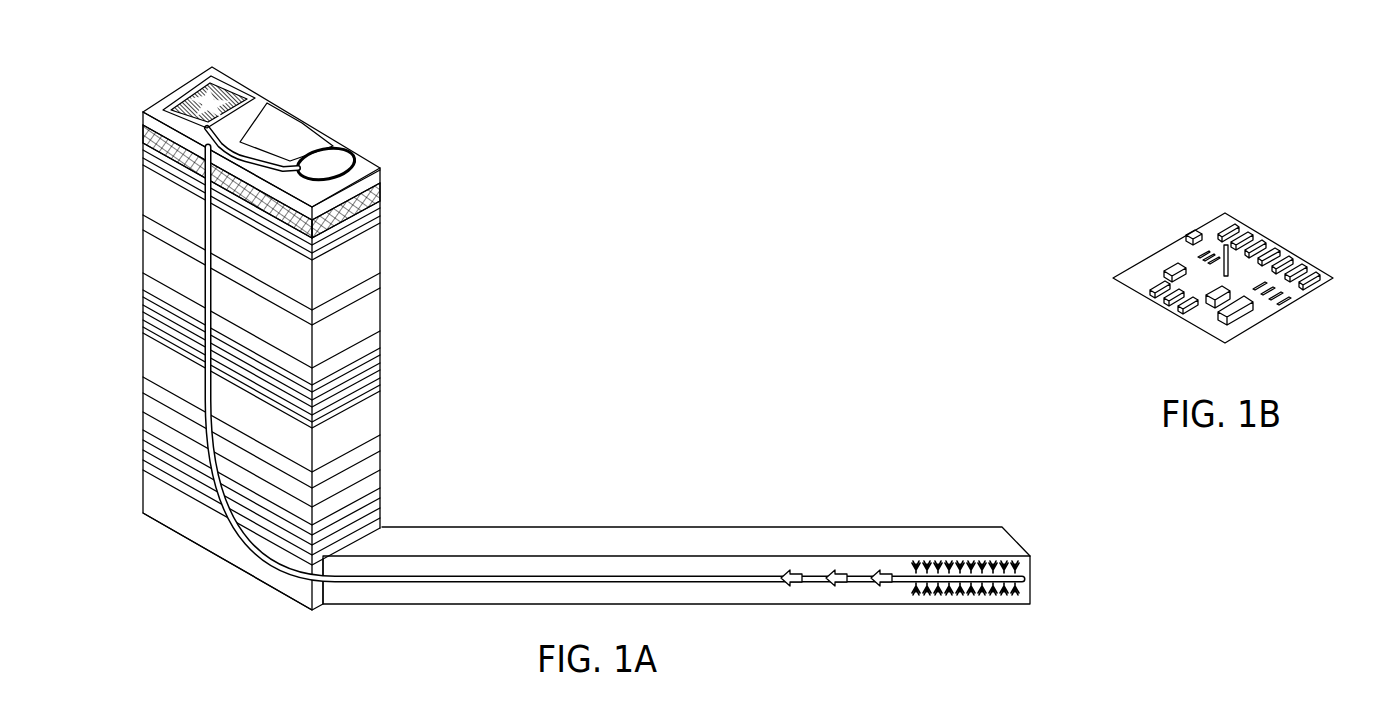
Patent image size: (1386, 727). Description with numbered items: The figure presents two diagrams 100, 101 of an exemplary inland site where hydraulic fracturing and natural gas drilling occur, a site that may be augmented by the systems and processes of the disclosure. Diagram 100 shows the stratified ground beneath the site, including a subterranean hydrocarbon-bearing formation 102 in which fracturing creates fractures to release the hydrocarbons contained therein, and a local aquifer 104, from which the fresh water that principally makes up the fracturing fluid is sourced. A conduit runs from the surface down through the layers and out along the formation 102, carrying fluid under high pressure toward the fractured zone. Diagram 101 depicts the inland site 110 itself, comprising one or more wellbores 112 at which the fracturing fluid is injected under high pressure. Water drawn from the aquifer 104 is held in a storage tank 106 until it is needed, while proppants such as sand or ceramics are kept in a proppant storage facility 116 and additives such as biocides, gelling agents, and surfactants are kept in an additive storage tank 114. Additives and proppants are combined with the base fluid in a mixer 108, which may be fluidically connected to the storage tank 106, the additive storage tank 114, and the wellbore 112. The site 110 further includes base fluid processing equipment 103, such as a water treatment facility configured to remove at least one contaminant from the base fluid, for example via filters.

In FIG. 1A, the diagram 100 is at (336, 98).
In FIG. 1B, the diagram 101 is at (1195, 236).
In FIG. 1A, the subterranean hydrocarbon-bearing formation 102 is at (751, 538).
In FIG. 1B, the base fluid processing equipment 103 is at (1242, 255).
In FIG. 1A, the local aquifer 104 is at (377, 186).
In FIG. 1B, the storage tank 106 is at (1263, 240).
In FIG. 1B, the mixer 108 is at (1209, 322).
In FIG. 1A, the inland site 110 is at (187, 82).
In FIG. 1B, the inland site 110 is at (1112, 277).
In FIG. 1B, the wellbore 112 is at (1239, 234).
In FIG. 1B, the additive storage tank 114 is at (1176, 264).
In FIG. 1B, the proppant storage facility 116 is at (1197, 231).